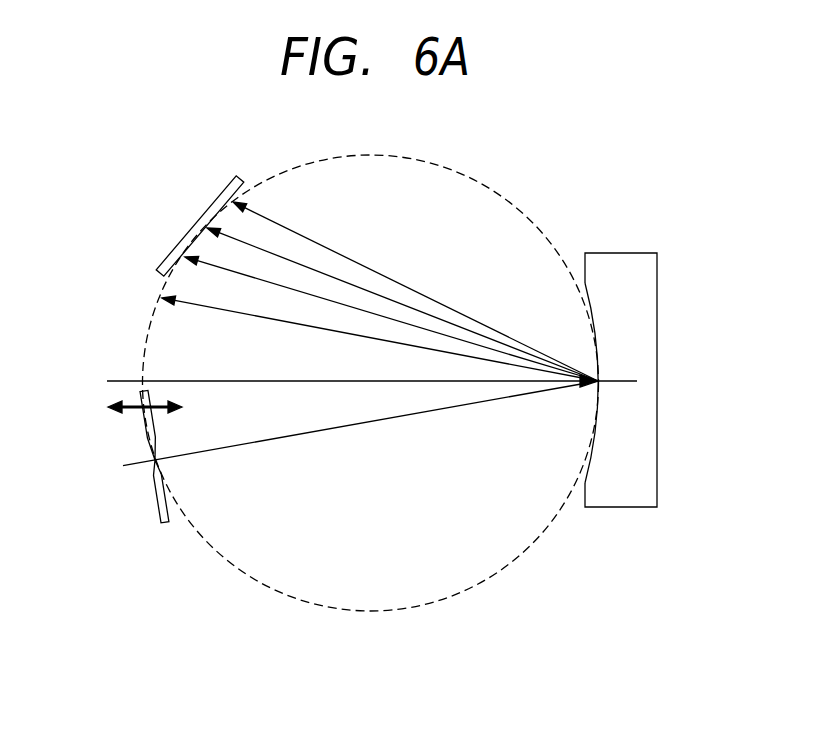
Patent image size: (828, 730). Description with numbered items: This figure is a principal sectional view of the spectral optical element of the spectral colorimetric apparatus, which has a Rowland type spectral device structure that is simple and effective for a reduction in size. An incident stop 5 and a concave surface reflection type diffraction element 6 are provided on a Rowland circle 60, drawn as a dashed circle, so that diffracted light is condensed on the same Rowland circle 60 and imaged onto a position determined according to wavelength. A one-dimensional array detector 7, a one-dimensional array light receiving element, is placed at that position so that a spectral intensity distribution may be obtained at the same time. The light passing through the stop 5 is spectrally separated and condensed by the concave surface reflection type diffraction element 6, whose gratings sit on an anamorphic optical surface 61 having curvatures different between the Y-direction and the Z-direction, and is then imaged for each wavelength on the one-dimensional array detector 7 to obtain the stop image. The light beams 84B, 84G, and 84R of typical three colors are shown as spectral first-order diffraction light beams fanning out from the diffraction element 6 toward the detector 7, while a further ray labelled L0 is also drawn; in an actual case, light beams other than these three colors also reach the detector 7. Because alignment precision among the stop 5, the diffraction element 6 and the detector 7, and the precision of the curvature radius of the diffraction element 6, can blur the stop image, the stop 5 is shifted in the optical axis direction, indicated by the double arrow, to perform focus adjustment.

The incident stop 5 is at (166, 526).
The concave surface reflection type diffraction element 6 is at (620, 509).
The one-dimensional array detector 7 is at (222, 192).
The Rowland circle 60 is at (443, 601).
The anamorphic optical surface 61 is at (589, 300).
The light beam 84R is at (388, 274).
The light beam 84G is at (315, 265).
The light beam 84B is at (288, 287).
The zeroth order light L0 is at (208, 306).